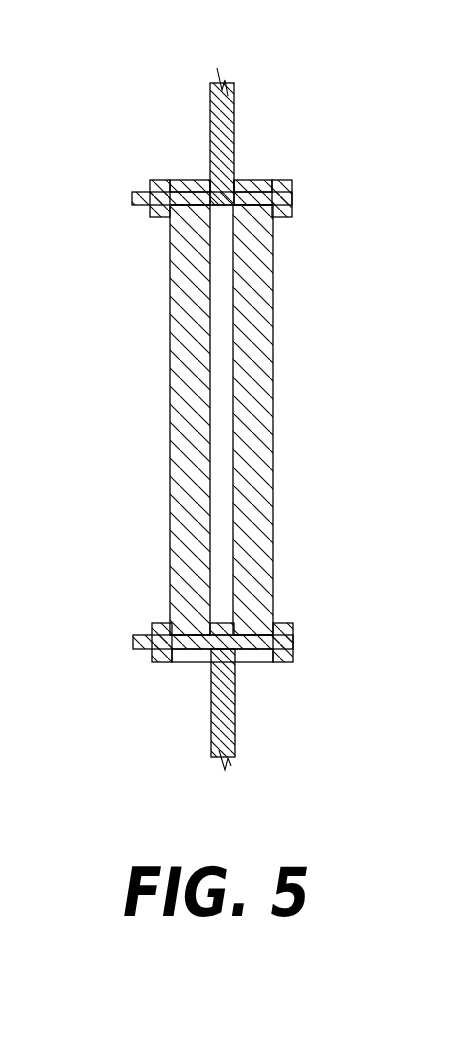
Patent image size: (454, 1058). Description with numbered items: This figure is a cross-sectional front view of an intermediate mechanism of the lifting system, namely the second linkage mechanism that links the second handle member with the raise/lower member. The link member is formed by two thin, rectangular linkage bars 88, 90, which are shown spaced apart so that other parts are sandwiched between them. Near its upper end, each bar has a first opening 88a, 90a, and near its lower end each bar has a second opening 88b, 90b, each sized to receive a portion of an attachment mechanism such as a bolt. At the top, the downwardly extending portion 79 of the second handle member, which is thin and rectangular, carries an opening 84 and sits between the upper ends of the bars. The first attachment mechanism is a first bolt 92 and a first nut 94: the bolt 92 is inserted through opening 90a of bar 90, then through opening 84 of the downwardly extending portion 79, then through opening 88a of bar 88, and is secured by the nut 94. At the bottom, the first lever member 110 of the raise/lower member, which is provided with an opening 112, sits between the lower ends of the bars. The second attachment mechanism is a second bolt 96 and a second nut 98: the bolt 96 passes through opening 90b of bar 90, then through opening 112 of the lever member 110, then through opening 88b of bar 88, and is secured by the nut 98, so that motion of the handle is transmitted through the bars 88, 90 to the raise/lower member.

The downwardly extending portion 79 is at (222, 85).
The opening 84 is at (220, 188).
The first nut 94 is at (152, 184).
The first bolt 92 is at (292, 182).
The linkage bar 88 is at (190, 415).
The linkage bar 90 is at (260, 427).
The first opening 88a is at (194, 206).
The first opening 90a is at (246, 205).
The second opening 88b is at (178, 632).
The second opening 90b is at (255, 632).
The second nut 98 is at (165, 660).
The second bolt 96 is at (283, 652).
The opening 112 is at (236, 672).
The first lever member 110 is at (218, 708).